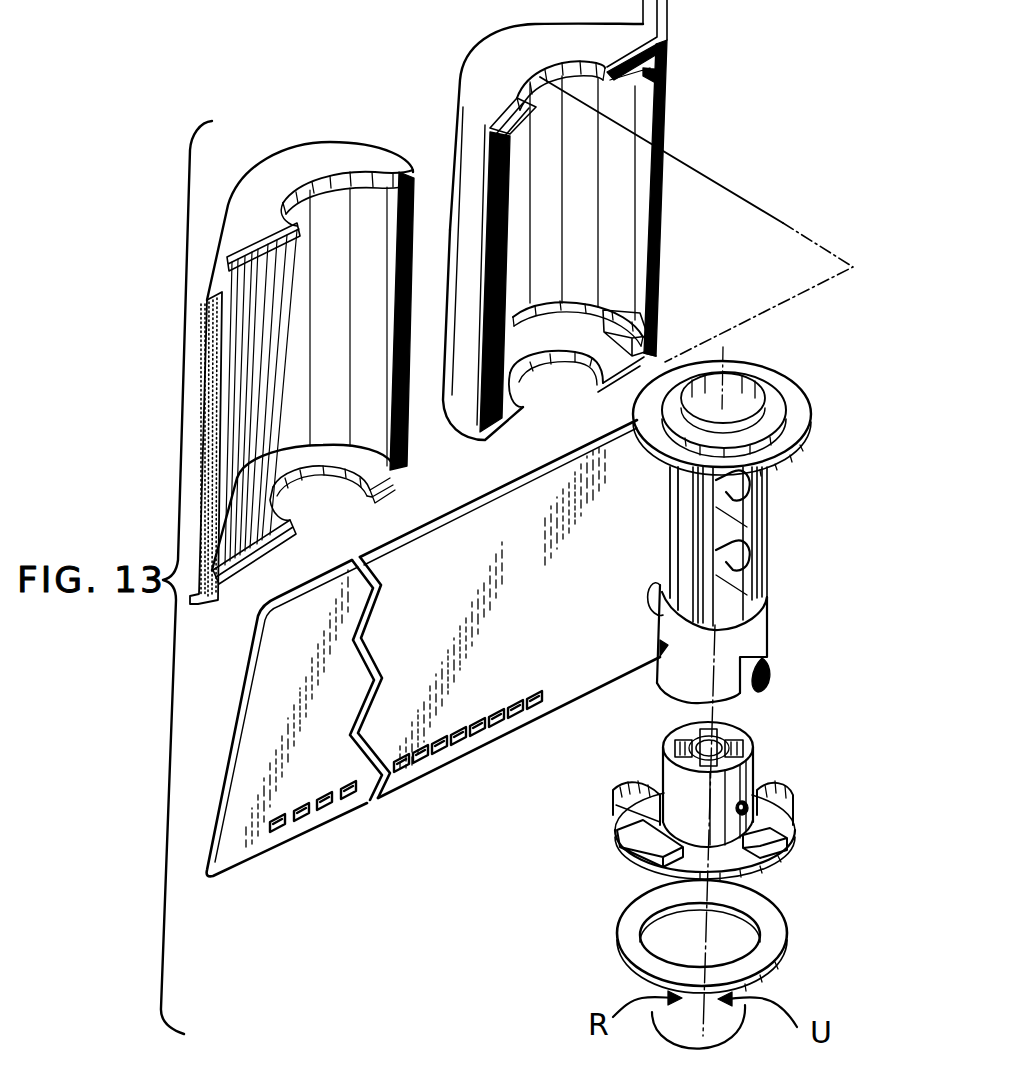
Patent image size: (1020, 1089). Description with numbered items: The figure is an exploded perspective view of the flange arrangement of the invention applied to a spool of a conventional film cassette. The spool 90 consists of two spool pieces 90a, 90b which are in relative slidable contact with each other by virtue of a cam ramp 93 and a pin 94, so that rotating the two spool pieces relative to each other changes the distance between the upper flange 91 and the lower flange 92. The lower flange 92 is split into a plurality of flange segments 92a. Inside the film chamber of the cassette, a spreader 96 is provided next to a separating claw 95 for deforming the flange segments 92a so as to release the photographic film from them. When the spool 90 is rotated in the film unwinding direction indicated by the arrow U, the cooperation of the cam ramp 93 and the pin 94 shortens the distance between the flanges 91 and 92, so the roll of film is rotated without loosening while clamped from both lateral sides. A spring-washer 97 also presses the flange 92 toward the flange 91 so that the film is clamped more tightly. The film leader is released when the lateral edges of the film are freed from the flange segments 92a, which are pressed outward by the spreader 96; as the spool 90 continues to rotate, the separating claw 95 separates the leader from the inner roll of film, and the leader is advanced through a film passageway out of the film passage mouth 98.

The spool 90 is at (572, 558).
The spool piece 90a is at (673, 553).
The spool piece 90b is at (664, 776).
The flange 91 is at (790, 370).
The lower flange 92 is at (790, 807).
The flange segments 92a is at (790, 845).
The cam ramp 93 is at (763, 660).
The pin 94 is at (747, 805).
The separating claw 95 is at (648, 350).
The spreader 96 is at (588, 307).
The spring-washer 97 is at (620, 913).
The film passage mouth 98 is at (207, 442).